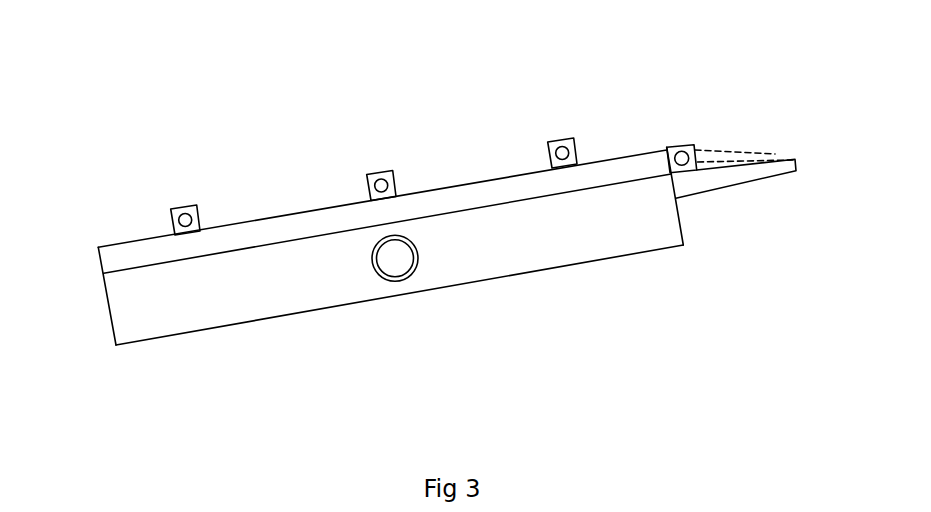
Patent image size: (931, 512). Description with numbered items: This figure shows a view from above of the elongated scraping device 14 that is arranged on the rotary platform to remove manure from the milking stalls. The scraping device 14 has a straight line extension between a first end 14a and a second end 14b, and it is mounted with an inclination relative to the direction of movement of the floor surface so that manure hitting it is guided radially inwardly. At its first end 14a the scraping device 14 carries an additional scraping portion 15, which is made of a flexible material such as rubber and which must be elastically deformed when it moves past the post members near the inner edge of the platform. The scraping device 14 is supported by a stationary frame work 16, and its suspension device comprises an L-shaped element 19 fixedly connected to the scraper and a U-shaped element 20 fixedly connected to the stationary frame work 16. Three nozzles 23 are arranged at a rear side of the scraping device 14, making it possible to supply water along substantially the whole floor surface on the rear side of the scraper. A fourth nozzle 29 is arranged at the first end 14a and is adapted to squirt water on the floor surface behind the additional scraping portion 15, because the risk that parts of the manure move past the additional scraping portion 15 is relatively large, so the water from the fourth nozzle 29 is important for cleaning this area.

The scraping device 14 is at (371, 264).
The first end 14a is at (673, 177).
The second end 14b is at (107, 297).
The additional scraping portion 15 is at (734, 177).
The stationary frame work 16 is at (390, 280).
The L-shaped element 19 is at (282, 233).
The U-shaped element 20 is at (528, 233).
The nozzles 23 is at (180, 214).
The fourth nozzle 29 is at (682, 151).